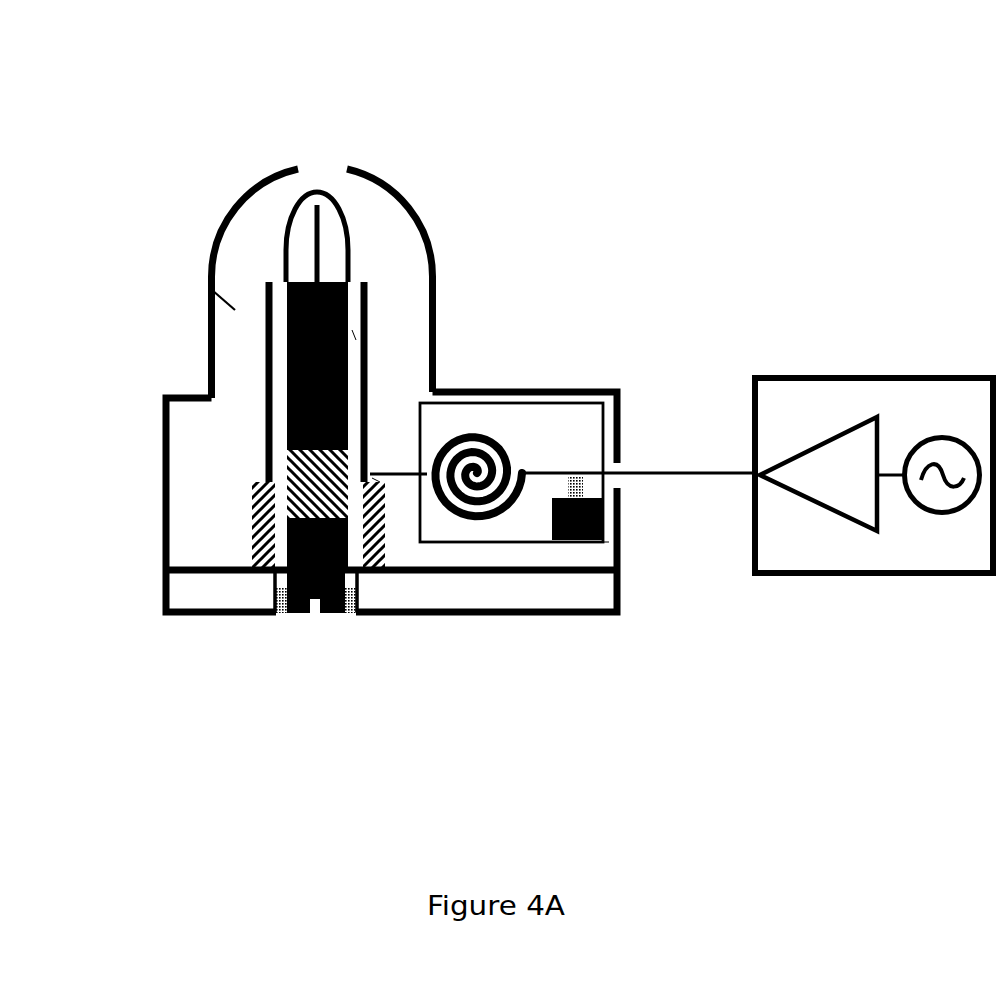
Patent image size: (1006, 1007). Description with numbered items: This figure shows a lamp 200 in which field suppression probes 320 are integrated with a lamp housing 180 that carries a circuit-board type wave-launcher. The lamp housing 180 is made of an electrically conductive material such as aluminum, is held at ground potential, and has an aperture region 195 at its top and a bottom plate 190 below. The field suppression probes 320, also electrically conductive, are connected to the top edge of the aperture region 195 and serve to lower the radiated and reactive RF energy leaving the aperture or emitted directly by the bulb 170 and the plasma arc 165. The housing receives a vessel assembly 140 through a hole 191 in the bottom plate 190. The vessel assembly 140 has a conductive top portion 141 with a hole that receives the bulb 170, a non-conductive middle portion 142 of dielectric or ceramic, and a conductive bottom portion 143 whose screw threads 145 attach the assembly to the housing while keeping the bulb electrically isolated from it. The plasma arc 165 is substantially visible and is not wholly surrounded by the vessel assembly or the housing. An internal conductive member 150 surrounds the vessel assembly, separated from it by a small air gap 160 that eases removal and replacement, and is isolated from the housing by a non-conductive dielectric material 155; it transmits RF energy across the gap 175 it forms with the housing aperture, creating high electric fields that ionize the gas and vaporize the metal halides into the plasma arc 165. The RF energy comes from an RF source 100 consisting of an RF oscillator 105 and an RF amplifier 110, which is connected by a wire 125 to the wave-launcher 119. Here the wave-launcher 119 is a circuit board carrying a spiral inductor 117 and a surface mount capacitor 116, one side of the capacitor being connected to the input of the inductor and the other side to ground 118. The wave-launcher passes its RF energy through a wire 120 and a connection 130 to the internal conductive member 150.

The RF source 100 is at (859, 366).
The RF oscillator 105 is at (943, 513).
The RF amplifier 110 is at (813, 505).
The surface mount capacitor 116 is at (607, 543).
The spiral inductor 117 is at (502, 442).
The ground 118 is at (560, 543).
The wave-launcher 119 is at (500, 543).
The wire 120 is at (393, 473).
The wire 125 is at (672, 474).
The connection 130 is at (375, 478).
The vessel assembly 140 is at (293, 625).
The top portion 141 is at (348, 373).
The middle portion 142 is at (300, 467).
The bottom portion 143 is at (272, 574).
The screw threads 145 is at (325, 614).
The internal conductive member 150 is at (265, 333).
The non-conductive dielectric material 155 is at (258, 510).
The air gap 160 is at (357, 338).
The plasma arc 165 is at (322, 247).
The bulb 170 is at (286, 258).
The gap 175 is at (212, 290).
The lamp housing 180 is at (165, 527).
The bottom plate 190 is at (165, 585).
The hole 191 is at (358, 615).
The aperture region 195 is at (208, 365).
The lamp 200 is at (206, 150).
The field suppression probes 320 is at (250, 191).